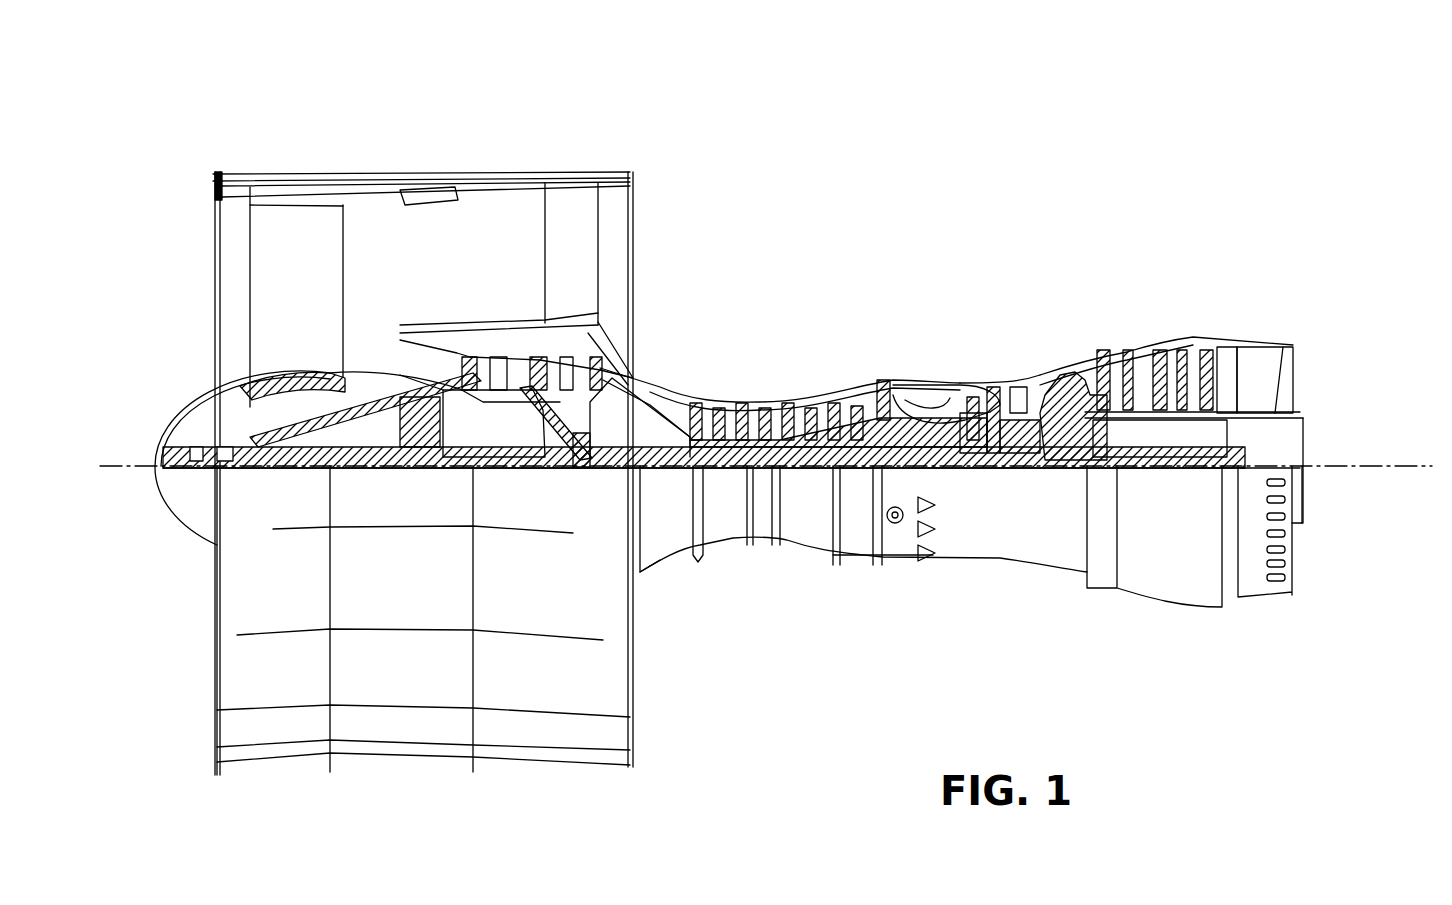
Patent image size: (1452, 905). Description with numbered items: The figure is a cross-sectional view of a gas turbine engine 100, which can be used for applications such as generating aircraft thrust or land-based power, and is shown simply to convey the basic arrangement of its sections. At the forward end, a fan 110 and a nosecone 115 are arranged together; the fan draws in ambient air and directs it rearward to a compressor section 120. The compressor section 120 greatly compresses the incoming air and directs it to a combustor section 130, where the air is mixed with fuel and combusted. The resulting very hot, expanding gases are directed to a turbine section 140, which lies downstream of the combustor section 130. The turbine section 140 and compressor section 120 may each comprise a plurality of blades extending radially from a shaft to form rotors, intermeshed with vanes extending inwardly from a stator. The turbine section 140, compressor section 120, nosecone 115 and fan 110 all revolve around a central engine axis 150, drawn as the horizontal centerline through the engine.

The gas turbine engine 100 is at (947, 230).
The fan 110 is at (341, 168).
The nosecone 115 is at (148, 408).
The compressor section 120 is at (693, 369).
The combustor section 130 is at (941, 362).
The turbine section 140 is at (1112, 325).
The central engine axis 150 is at (768, 438).